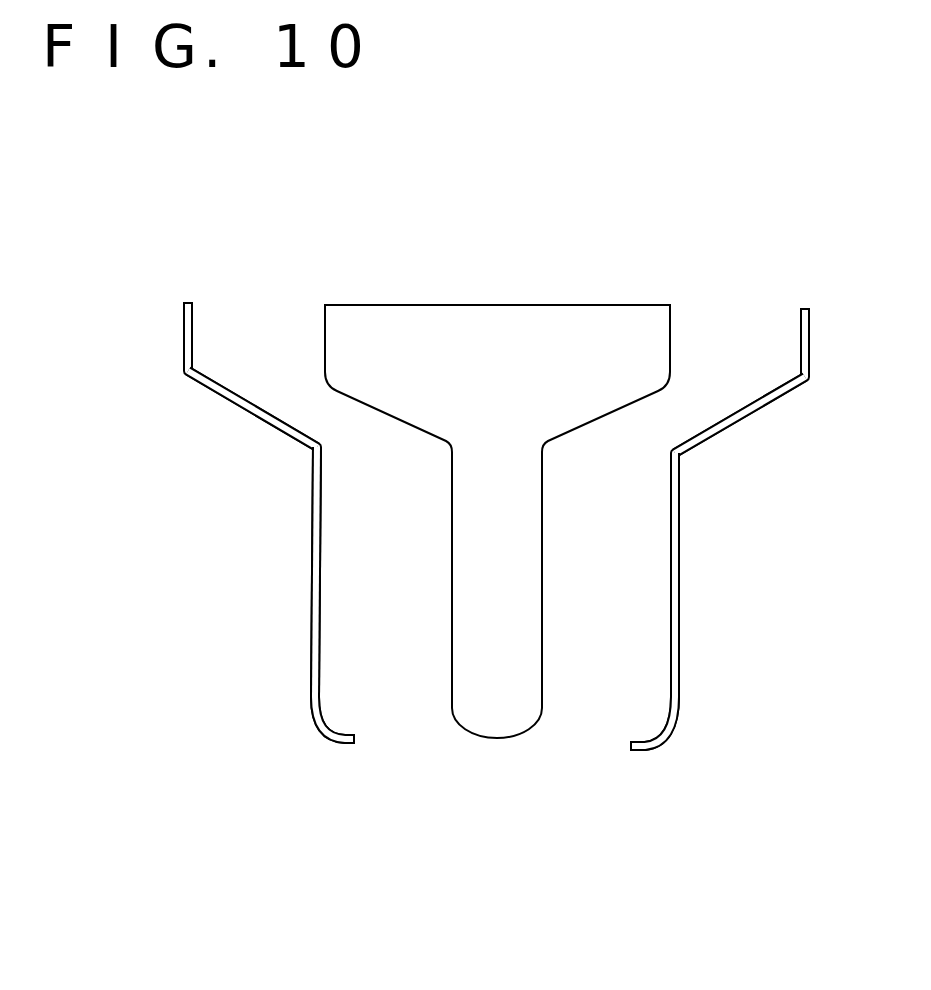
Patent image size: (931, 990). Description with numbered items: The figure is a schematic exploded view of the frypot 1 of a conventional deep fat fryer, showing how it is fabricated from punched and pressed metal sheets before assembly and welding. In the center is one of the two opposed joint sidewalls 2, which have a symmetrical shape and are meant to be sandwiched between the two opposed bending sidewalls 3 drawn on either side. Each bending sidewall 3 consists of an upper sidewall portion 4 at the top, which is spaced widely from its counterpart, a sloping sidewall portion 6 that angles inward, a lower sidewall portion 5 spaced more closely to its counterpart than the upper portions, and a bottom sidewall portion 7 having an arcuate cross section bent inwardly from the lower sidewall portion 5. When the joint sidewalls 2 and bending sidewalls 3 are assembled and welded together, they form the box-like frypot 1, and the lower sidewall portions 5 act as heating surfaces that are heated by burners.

The frypot 1 is at (700, 298).
The joint sidewall 2 is at (537, 305).
The bending sidewall 3 is at (190, 292).
The upper sidewall portion 4 is at (193, 337).
The lower sidewall portion 5 is at (312, 538).
The sloping sidewall portion 6 is at (262, 432).
The bottom sidewall portion 7 is at (327, 738).